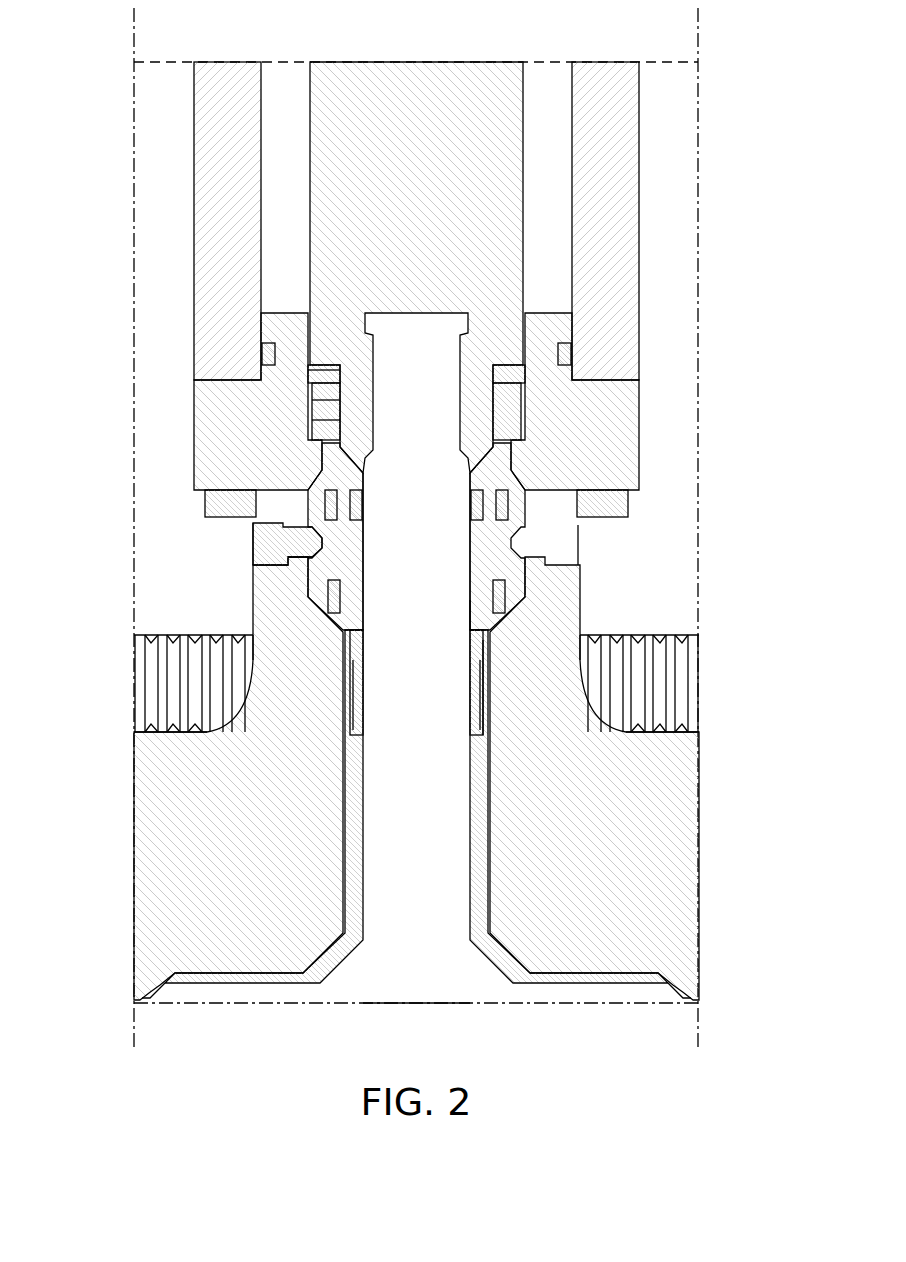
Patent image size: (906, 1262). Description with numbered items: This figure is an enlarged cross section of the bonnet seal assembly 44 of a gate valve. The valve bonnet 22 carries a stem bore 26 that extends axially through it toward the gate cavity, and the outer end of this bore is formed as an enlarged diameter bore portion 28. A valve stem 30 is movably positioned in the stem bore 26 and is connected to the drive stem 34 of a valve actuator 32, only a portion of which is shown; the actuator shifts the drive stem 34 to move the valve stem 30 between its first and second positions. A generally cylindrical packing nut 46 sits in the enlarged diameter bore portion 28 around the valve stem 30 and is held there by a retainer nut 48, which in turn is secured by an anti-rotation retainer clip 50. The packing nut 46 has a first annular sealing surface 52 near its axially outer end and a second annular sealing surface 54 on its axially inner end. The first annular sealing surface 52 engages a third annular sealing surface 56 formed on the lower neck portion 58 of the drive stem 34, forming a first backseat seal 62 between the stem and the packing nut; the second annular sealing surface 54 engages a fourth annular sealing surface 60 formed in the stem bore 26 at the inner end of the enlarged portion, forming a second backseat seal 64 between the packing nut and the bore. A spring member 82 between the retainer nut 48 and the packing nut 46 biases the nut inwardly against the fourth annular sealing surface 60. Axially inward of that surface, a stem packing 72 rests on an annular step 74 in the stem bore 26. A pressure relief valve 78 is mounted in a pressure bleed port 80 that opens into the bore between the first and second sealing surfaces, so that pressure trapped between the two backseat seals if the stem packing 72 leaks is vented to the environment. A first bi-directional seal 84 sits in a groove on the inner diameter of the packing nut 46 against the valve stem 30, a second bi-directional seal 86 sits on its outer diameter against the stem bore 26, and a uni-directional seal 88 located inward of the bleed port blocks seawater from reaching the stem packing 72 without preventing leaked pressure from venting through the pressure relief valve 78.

The valve bonnet 22 is at (698, 870).
The stem bore 26 is at (470, 843).
The enlarged diameter bore portion 28 is at (395, 560).
The valve stem 30 is at (415, 1003).
The valve actuator 32 is at (648, 197).
The drive stem 34 is at (383, 88).
The bonnet seal assembly 44 is at (505, 423).
The packing nut 46 is at (518, 590).
The retainer nut 48 is at (512, 468).
The anti-rotation retainer clip 50 is at (525, 372).
The first annular sealing surface 52 is at (310, 410).
The second annular sealing surface 54 is at (496, 700).
The third annular sealing surface 56 is at (481, 424).
The lower neck portion 58 is at (525, 420).
The fourth annular sealing surface 60 is at (515, 637).
The first backseat seal 62 is at (310, 378).
The second backseat seal 64 is at (330, 580).
The stem packing 72 is at (490, 680).
The annular step 74 is at (355, 790).
The pressure relief valve 78 is at (262, 545).
The pressure bleed port 80 is at (300, 572).
The spring member 82 is at (489, 513).
The first bi-directional seal 84 is at (519, 502).
The second bi-directional seal 86 is at (523, 520).
The uni-directional seal 88 is at (477, 618).